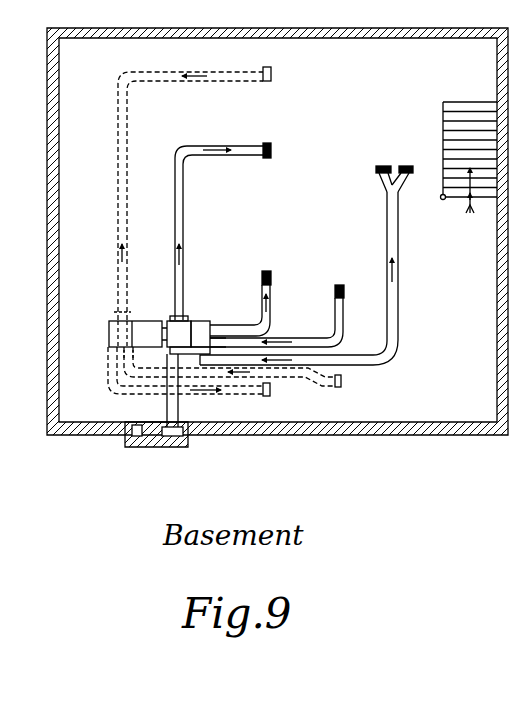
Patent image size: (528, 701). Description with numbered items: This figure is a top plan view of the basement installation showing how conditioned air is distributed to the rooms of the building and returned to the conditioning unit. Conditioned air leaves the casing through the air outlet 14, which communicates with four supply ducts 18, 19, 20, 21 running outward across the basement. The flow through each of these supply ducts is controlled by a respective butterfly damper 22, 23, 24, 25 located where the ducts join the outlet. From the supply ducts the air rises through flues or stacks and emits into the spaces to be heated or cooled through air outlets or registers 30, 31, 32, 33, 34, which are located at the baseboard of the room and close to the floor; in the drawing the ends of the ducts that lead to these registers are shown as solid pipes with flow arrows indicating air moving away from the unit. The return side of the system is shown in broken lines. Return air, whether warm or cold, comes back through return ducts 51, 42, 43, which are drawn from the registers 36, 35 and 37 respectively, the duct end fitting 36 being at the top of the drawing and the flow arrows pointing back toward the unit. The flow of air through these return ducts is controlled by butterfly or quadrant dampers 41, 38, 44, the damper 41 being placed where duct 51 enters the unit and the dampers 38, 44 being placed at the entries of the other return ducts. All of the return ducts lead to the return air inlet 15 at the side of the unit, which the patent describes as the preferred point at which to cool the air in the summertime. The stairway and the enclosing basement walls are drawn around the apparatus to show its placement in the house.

The air outlet 14 is at (165, 342).
The return air inlet 15 is at (122, 333).
The supply duct 18 is at (333, 338).
The supply duct 19 is at (392, 330).
The supply duct 20 is at (264, 322).
The supply duct 21 is at (181, 217).
The butterfly damper 22 is at (182, 312).
The butterfly damper 23 is at (213, 328).
The butterfly damper 24 is at (217, 342).
The butterfly damper 25 is at (200, 358).
The air outlet register 30 is at (265, 270).
The air outlet register 31 is at (272, 150).
The air outlet register 32 is at (383, 165).
The air outlet register 33 is at (338, 283).
The air outlet register 34 is at (406, 166).
The return register 35 is at (277, 394).
The pipe end fitting 36 is at (272, 74).
The return register 37 is at (343, 382).
The quadrant damper 38 is at (118, 358).
The quadrant damper 41 is at (118, 310).
The return duct 42 is at (135, 388).
The return duct 43 is at (287, 376).
The quadrant damper 44 is at (128, 358).
The return duct 51 is at (120, 210).